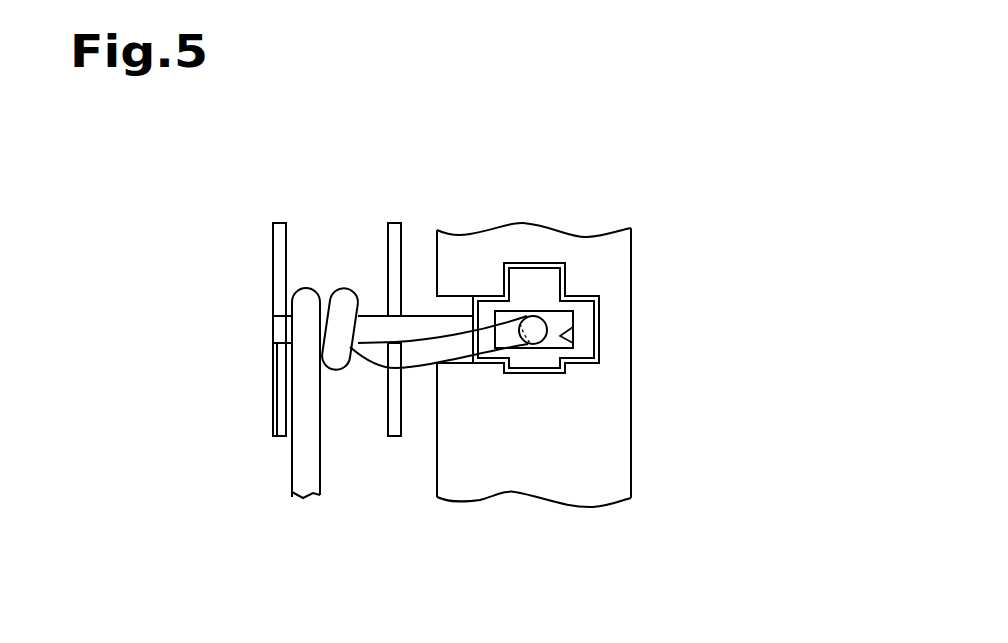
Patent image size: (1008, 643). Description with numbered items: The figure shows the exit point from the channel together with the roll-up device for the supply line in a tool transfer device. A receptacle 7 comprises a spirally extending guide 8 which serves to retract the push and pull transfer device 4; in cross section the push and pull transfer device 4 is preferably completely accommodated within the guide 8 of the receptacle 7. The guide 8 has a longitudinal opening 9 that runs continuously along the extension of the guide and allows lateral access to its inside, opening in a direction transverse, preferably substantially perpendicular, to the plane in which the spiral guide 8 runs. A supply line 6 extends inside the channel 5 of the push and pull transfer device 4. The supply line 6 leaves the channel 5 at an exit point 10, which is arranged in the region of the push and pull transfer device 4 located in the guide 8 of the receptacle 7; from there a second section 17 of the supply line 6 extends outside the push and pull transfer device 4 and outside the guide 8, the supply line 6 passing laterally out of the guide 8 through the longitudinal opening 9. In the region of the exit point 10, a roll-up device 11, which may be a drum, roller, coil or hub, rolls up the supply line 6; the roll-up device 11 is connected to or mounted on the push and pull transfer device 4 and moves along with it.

The push and pull transfer device 4 is at (598, 328).
The channel 5 is at (598, 348).
The supply line 6 is at (598, 317).
The receptacle 7 is at (690, 233).
The spirally extending guide 8 is at (600, 307).
The longitudinal opening 9 is at (436, 303).
The exit point 10 is at (532, 352).
The roll-up device 11 is at (330, 256).
The second section 17 is at (277, 464).